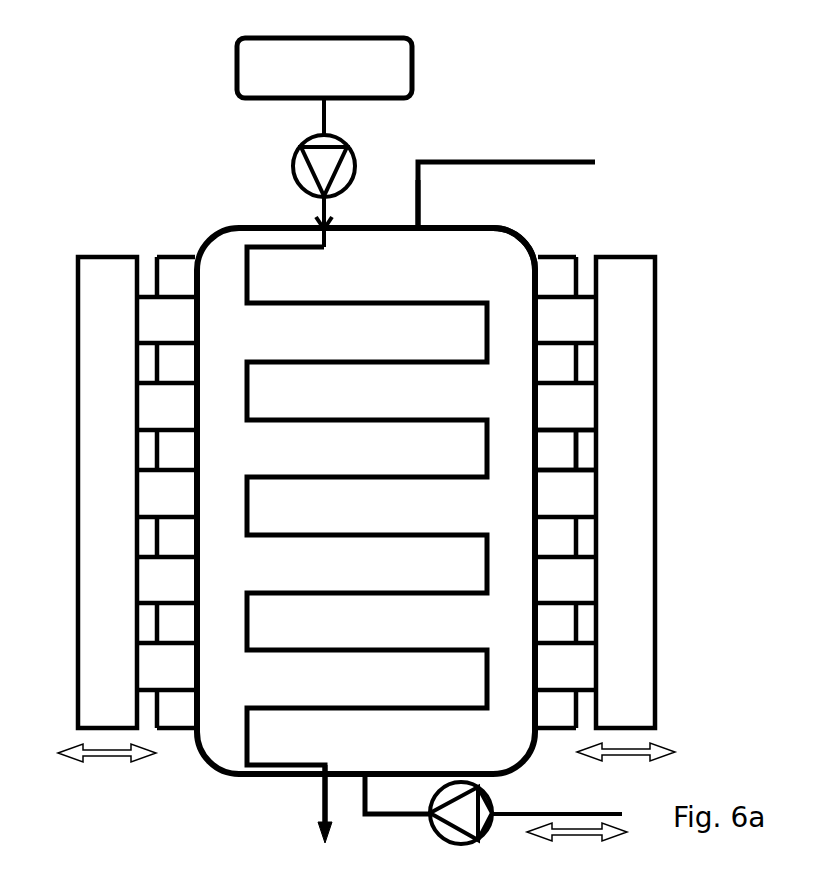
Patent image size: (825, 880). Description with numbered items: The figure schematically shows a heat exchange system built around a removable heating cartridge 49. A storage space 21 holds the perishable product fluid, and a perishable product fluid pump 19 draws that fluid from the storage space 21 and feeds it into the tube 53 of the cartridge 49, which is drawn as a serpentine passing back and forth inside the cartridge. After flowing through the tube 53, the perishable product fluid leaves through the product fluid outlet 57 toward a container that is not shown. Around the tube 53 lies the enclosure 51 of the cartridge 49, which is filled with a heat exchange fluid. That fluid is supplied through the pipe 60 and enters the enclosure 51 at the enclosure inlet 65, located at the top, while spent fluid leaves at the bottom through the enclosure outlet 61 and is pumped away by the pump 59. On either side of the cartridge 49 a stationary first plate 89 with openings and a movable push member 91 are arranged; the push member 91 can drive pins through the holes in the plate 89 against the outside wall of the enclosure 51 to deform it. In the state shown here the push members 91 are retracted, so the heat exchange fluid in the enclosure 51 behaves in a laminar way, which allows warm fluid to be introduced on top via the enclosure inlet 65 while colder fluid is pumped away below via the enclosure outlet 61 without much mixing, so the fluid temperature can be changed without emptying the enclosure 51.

The perishable product fluid pump 19 is at (293, 180).
The storage space 21 is at (413, 96).
The removable heating cartridge 49 is at (211, 214).
The enclosure 51 is at (508, 247).
The tube 53 is at (490, 336).
The product fluid outlet 57 is at (323, 822).
The pump 59 is at (488, 797).
The pipe 60 is at (510, 160).
The enclosure outlet 61 is at (368, 800).
The enclosure inlet 65 is at (418, 193).
The first plate 89 is at (567, 458).
The push member 91 is at (655, 412).